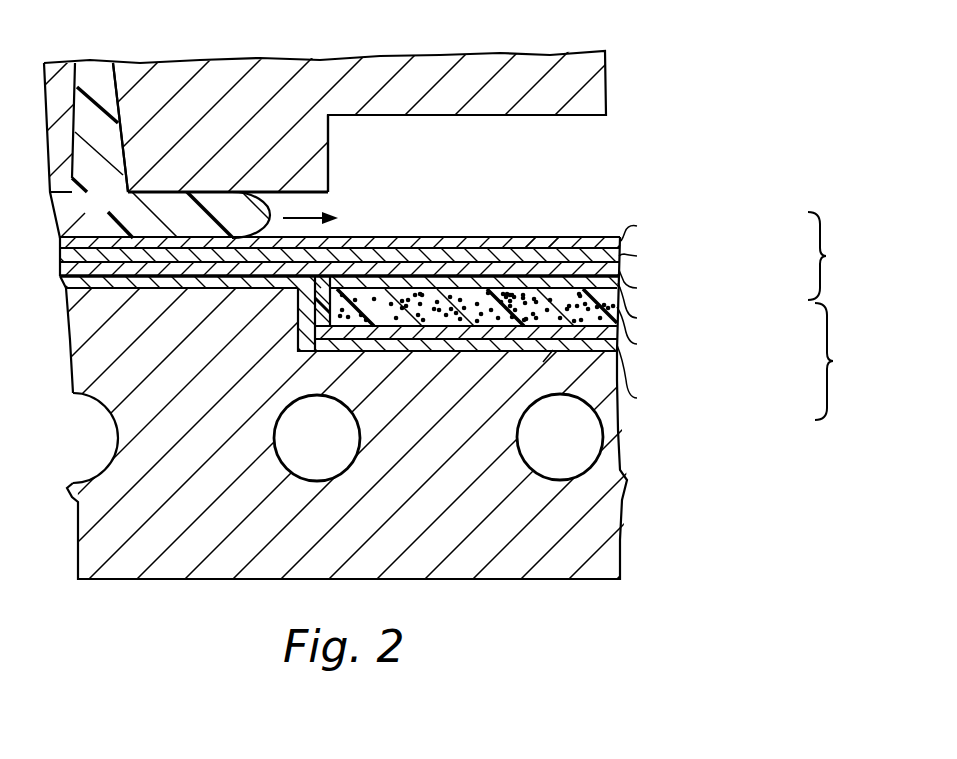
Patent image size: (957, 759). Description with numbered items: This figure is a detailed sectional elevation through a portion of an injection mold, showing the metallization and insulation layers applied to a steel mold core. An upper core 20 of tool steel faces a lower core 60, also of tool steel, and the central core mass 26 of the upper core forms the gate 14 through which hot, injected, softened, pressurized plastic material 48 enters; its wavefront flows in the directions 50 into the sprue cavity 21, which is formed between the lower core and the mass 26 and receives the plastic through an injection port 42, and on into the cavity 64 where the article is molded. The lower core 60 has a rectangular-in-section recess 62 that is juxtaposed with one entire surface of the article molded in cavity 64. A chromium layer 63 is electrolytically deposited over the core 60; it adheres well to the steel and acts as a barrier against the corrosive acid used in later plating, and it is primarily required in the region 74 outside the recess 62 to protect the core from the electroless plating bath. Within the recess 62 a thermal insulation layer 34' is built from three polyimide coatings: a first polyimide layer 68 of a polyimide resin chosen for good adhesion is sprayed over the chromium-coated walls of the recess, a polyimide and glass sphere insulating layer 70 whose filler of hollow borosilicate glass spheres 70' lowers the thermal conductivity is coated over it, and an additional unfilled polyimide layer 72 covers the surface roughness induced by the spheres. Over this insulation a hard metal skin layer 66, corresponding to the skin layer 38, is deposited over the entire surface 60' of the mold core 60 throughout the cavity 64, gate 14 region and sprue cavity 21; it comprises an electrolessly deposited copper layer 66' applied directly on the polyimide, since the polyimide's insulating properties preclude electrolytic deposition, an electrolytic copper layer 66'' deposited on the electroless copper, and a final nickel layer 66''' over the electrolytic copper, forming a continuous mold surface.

The gate 14 is at (98, 64).
The upper mold half core 20 is at (607, 78).
The central core mass 26 is at (322, 158).
The flow directions 50 is at (322, 200).
The cavity 64 is at (466, 177).
The plastic material 48 is at (186, 193).
The injection port 42 is at (263, 192).
The sprue cavity 21 is at (330, 229).
The hard metal skin layer 66 is at (310, 294).
The electrolessly deposited copper layer 66' is at (179, 309).
The electrolytic copper layer 66'' is at (102, 214).
The nickel layer 66''' is at (548, 216).
The hard metal skin layer 38 is at (427, 267).
The thermal insulation layer 34' is at (463, 348).
The lower core 60 is at (458, 435).
The surface of the mold core 60' is at (182, 314).
The chromium layer 63 is at (302, 346).
The polyimide layer 72 is at (312, 313).
The recess 62 is at (380, 353).
The polyimide and glass sphere insulating layer 70 is at (477, 344).
The polyimide layer 68 is at (471, 351).
The glass spheres 70' is at (588, 363).
The region outside the recess 74 is at (183, 464).